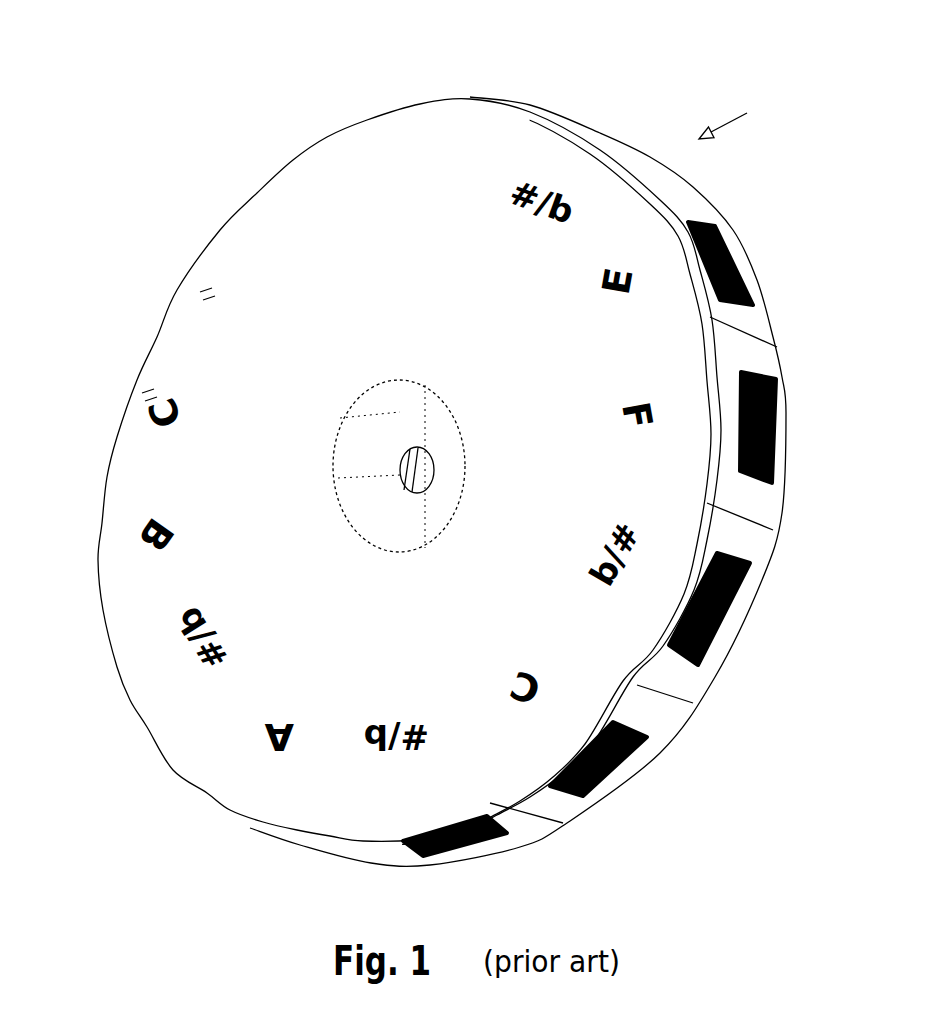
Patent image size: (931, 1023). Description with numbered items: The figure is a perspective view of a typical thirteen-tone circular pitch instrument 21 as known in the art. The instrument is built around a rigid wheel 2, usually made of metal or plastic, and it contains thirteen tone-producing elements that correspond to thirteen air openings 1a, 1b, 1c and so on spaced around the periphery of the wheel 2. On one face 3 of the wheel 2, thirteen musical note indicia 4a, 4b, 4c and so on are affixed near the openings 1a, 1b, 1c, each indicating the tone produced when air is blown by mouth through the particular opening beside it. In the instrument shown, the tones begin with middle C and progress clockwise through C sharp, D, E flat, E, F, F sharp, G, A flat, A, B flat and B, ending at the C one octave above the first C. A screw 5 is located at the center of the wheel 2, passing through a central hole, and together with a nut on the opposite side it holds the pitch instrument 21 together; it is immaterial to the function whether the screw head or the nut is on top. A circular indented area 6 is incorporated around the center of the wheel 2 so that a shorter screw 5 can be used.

The air opening 1a is at (728, 253).
The air opening 1b is at (775, 395).
The air opening 1c is at (740, 597).
The wheel 2 is at (673, 680).
The face 3 is at (293, 330).
The musical note indicium 4a is at (203, 307).
The musical note indicium 4b is at (297, 240).
The musical note indicium 4c is at (412, 160).
The screw 5 is at (402, 468).
The circular indented area 6 is at (372, 440).
The thirteen-tone circular pitch instrument 21 is at (749, 113).